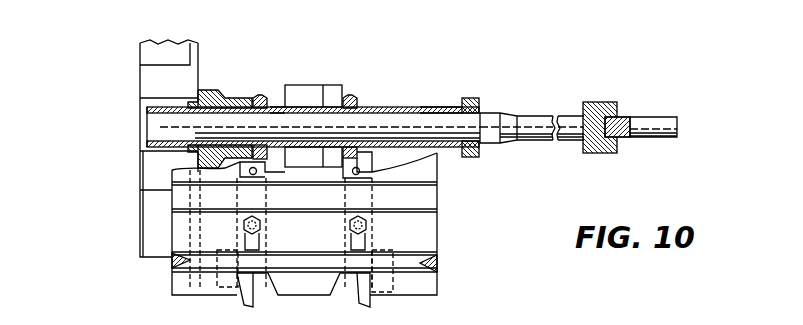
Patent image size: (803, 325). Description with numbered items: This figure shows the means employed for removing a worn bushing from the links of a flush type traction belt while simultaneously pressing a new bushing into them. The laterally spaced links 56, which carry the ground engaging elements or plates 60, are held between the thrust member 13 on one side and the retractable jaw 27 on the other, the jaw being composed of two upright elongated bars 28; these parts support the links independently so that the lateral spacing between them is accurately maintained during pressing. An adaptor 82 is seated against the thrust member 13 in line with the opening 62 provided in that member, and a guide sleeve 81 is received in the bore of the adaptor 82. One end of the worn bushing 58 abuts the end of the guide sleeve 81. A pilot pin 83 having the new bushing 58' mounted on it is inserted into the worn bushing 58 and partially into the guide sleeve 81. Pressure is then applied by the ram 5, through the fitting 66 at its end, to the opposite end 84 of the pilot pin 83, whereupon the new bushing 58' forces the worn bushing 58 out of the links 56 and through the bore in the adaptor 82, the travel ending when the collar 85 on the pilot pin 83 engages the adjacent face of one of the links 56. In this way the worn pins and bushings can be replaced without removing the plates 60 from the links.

The thrust member 13 is at (147, 58).
The opening 62 is at (141, 151).
The guide sleeve 81 is at (142, 108).
The pilot pin 83 is at (378, 120).
The opposite end of guide pin 84 is at (538, 138).
The collar 85 is at (470, 157).
The worn bushing 58 is at (302, 75).
The new bushing 58' is at (445, 81).
The adaptor 82 is at (212, 88).
The links 56 is at (260, 93).
The retractable jaw 27 is at (340, 85).
The upright elongated bars 28 is at (293, 87).
The ground engaging elements or plates 60 is at (427, 230).
The fitting 66 is at (603, 102).
The ram 5 is at (663, 120).